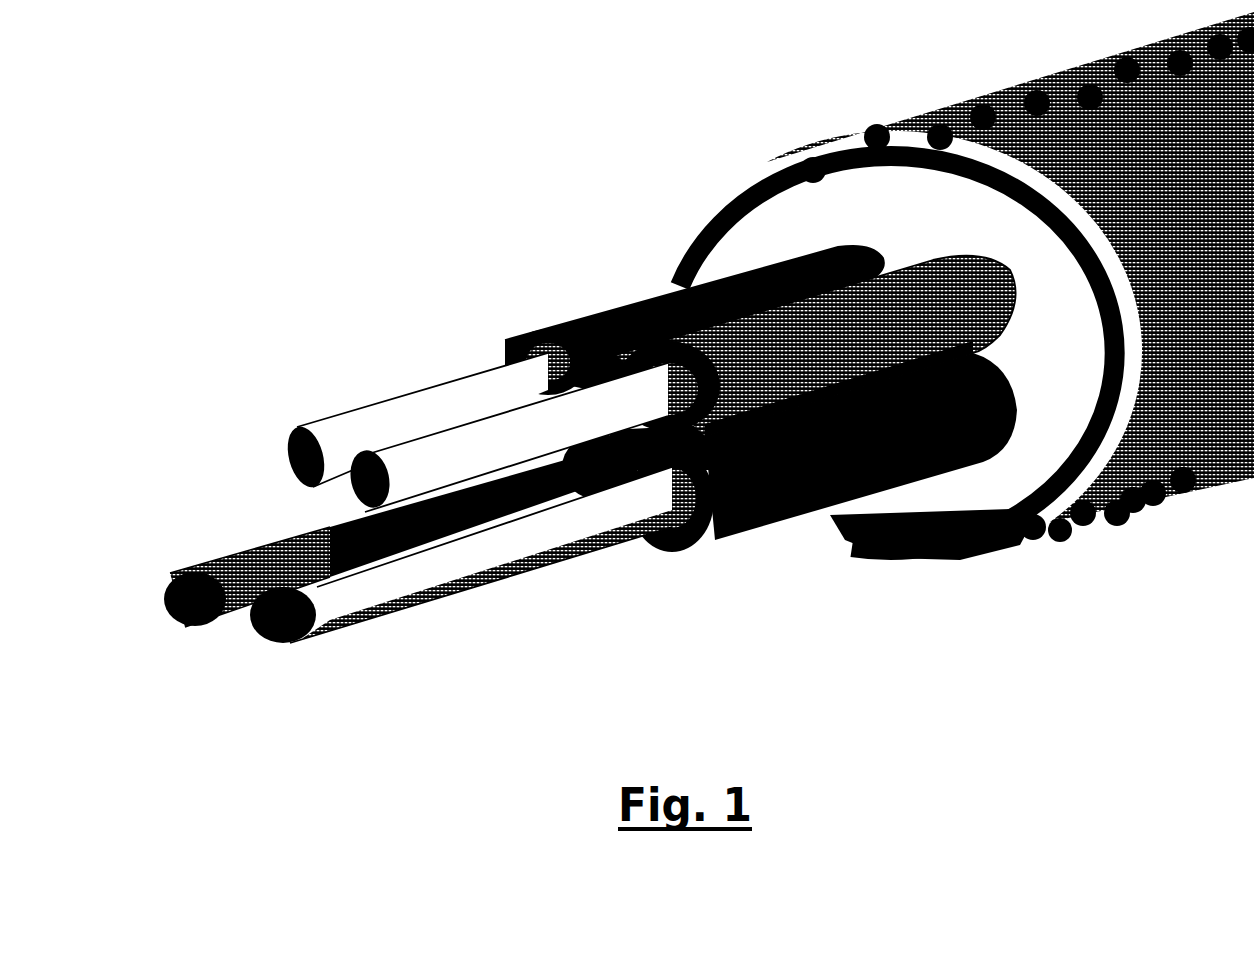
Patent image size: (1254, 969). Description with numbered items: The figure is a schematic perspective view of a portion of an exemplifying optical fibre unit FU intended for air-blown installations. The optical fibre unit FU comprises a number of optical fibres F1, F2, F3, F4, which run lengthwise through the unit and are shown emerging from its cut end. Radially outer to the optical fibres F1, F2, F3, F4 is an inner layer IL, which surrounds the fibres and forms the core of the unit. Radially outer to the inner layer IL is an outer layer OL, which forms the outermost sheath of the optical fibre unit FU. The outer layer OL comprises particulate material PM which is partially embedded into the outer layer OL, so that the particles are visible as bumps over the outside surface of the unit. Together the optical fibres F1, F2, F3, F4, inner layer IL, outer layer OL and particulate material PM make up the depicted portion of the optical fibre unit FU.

The optical fibre unit FU is at (709, 346).
The optical fibre F1 is at (586, 290).
The optical fibre F2 is at (724, 283).
The optical fibre F3 is at (677, 574).
The optical fibre F4 is at (233, 521).
The inner layer IL is at (907, 515).
The outer layer OL is at (1058, 505).
The particulate material PM is at (1130, 467).